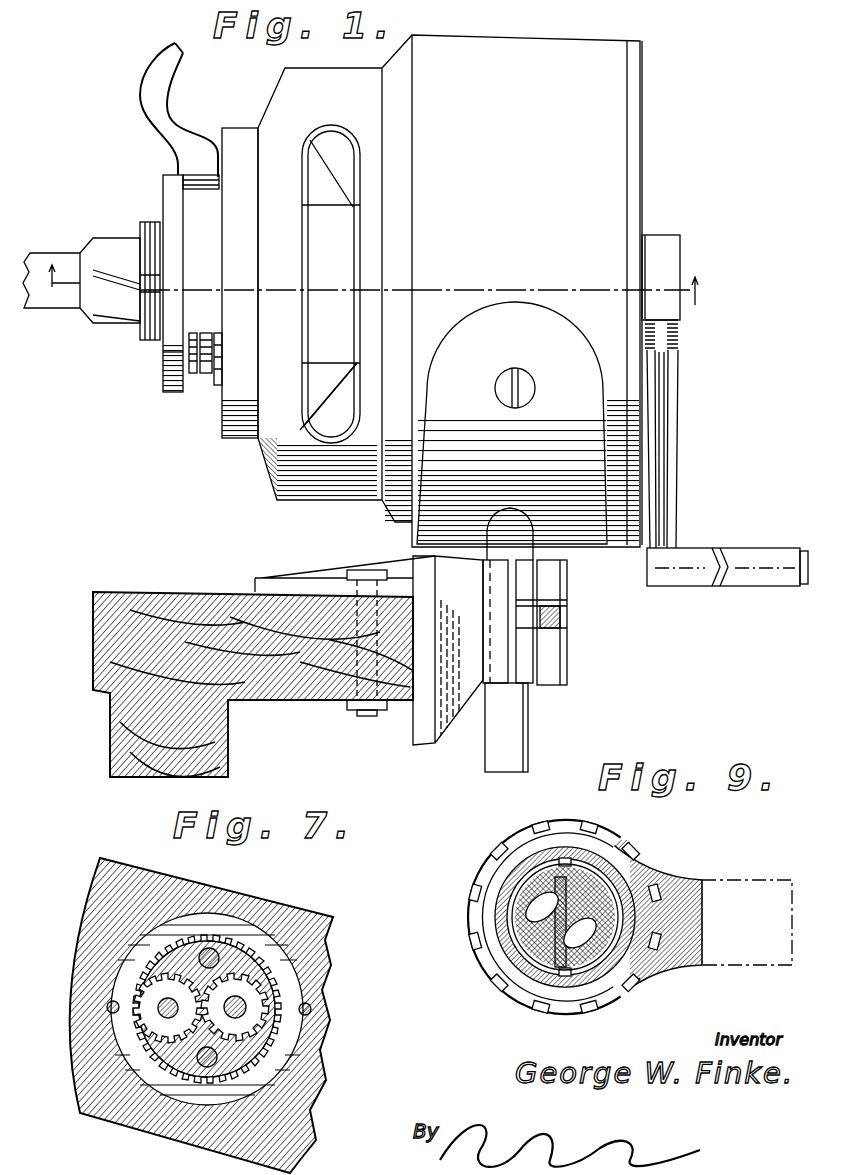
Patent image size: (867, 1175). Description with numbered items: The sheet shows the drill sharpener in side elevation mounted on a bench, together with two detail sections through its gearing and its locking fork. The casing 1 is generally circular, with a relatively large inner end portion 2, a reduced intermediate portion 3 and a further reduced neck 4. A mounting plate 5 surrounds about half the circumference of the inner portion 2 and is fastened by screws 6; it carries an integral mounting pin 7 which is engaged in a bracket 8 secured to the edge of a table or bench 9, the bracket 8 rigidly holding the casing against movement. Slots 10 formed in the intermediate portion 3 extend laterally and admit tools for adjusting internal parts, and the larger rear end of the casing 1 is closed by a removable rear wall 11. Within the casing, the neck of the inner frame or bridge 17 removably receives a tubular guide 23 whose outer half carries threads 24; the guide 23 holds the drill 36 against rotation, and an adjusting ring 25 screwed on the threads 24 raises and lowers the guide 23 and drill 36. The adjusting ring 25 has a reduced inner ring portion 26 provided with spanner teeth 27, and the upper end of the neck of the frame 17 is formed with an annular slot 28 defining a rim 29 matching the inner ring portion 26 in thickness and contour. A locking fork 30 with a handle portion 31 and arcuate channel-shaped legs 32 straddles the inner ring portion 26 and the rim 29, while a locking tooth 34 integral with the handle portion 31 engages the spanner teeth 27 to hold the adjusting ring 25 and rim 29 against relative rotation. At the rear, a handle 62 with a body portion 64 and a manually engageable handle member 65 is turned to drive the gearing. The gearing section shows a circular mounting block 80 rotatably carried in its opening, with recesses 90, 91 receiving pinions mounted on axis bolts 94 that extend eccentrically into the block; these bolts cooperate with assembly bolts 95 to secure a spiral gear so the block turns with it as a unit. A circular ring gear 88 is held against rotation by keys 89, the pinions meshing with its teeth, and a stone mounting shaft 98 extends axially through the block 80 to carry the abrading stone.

In FIG. 1, the casing 1 is at (643, 107).
In FIG. 1, the inner end portion 2 is at (607, 217).
In FIG. 1, the intermediate portion 3 is at (340, 80).
In FIG. 1, the neck 4 is at (240, 140).
In FIG. 1, the mounting plate 5 is at (512, 423).
In FIG. 1, the screws 6 is at (496, 391).
In FIG. 1, the mounting pin 7 is at (530, 724).
In FIG. 1, the bracket 8 is at (568, 657).
In FIG. 1, the table or bench 9 is at (333, 680).
In FIG. 1, the slots 10 is at (300, 430).
In FIG. 1, the removable rear wall 11 is at (637, 163).
In FIG. 1, the inner frame or bridge 17 is at (356, 194).
In FIG. 1, the tubular guide 23 is at (140, 237).
In FIG. 1, the threads 24 is at (157, 222).
In FIG. 1, the adjusting ring 25 is at (163, 378).
In FIG. 1, the inner ring portion 26 is at (188, 392).
In FIG. 9, the inner ring portion 26 is at (492, 980).
In FIG. 1, the spanner teeth 27 is at (165, 351).
In FIG. 9, the spanner teeth 27 is at (473, 920).
In FIG. 1, the annular slot 28 is at (208, 392).
In FIG. 1, the rim 29 is at (194, 392).
In FIG. 1, the locking fork 30 is at (148, 105).
In FIG. 9, the locking fork 30 is at (688, 874).
In FIG. 1, the handle portion 31 is at (162, 60).
In FIG. 9, the handle portion 31 is at (748, 880).
In FIG. 9, the arcuate channel-shaped legs 32 is at (592, 829).
In FIG. 9, the locking tooth 34 is at (655, 970).
In FIG. 1, the drill 36 is at (83, 245).
In FIG. 9, the drill 36 is at (587, 897).
In FIG. 1, the handle 62 is at (672, 463).
In FIG. 1, the body portion 64 is at (662, 405).
In FIG. 1, the handle member 65 is at (748, 552).
In FIG. 7, the circular mounting block 80 is at (252, 940).
In FIG. 7, the circular ring gear 88 is at (288, 970).
In FIG. 7, the keys 89 is at (313, 1008).
In FIG. 7, the recess 90 is at (193, 937).
In FIG. 7, the recess 91 is at (265, 963).
In FIG. 7, the axis bolts 94 is at (163, 1010).
In FIG. 7, the assembly bolts 95 is at (218, 950).
In FIG. 7, the stone mounting shaft 98 is at (243, 1005).